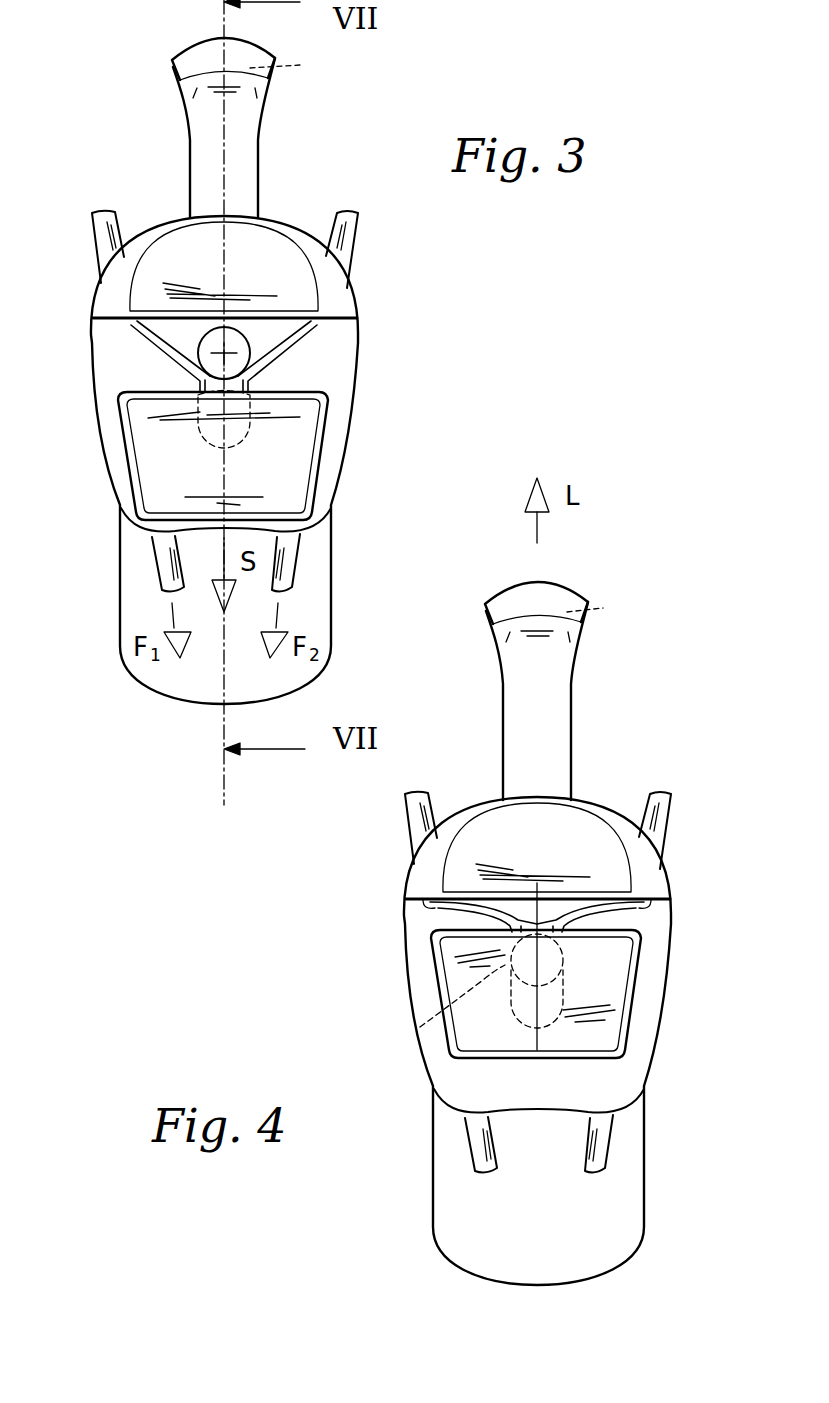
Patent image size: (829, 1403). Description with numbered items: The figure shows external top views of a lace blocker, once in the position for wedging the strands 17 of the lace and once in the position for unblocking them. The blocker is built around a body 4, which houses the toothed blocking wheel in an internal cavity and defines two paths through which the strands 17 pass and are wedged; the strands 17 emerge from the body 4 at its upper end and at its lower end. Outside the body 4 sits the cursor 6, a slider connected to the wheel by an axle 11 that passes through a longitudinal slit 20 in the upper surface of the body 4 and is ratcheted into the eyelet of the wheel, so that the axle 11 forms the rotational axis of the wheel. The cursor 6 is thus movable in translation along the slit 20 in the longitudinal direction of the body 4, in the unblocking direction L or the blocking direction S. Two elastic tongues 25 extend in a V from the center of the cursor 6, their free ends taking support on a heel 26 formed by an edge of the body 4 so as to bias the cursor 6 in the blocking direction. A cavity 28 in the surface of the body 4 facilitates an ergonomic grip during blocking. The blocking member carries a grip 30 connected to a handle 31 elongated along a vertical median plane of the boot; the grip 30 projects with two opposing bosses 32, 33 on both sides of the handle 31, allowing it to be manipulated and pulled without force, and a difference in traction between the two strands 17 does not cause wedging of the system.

In FIG. 3, the body 4 is at (287, 233).
In FIG. 4, the body 4 is at (587, 805).
In FIG. 3, the cursor 6 is at (323, 455).
In FIG. 4, the cursor 6 is at (635, 967).
In FIG. 4, the axle 11 is at (420, 1027).
In FIG. 3, the strands 17 is at (103, 252).
In FIG. 4, the strands 17 is at (410, 852).
In FIG. 3, the slit 20 is at (253, 384).
In FIG. 4, the slit 20 is at (553, 1002).
In FIG. 3, the elastic tongues 25 is at (160, 352).
In FIG. 4, the elastic tongues 25 is at (443, 908).
In FIG. 3, the heel 26 is at (165, 347).
In FIG. 3, the cavity 28 is at (176, 247).
In FIG. 4, the cavity 28 is at (490, 832).
In FIG. 3, the grip 30 is at (195, 55).
In FIG. 4, the grip 30 is at (558, 602).
In FIG. 3, the handle 31 is at (233, 150).
In FIG. 4, the handle 31 is at (545, 673).
In FIG. 3, the boss 32 is at (188, 70).
In FIG. 4, the boss 32 is at (498, 612).
In FIG. 3, the boss 33 is at (300, 65).
In FIG. 4, the boss 33 is at (603, 608).